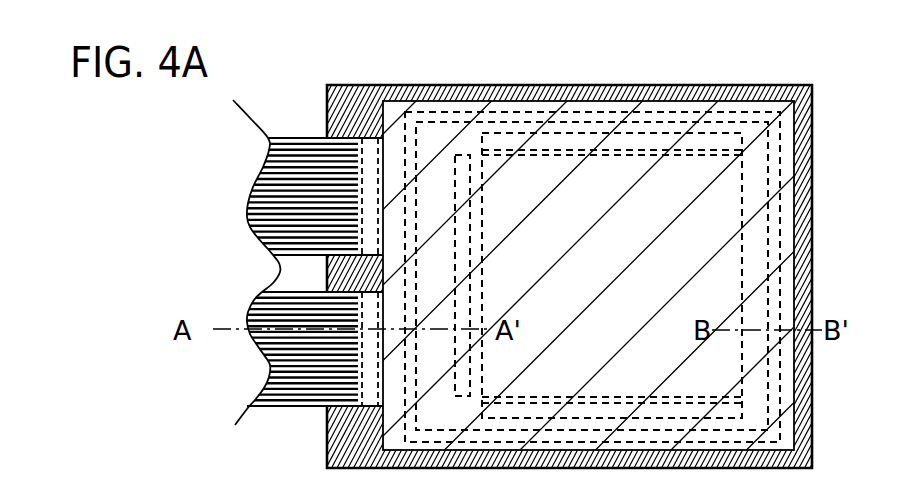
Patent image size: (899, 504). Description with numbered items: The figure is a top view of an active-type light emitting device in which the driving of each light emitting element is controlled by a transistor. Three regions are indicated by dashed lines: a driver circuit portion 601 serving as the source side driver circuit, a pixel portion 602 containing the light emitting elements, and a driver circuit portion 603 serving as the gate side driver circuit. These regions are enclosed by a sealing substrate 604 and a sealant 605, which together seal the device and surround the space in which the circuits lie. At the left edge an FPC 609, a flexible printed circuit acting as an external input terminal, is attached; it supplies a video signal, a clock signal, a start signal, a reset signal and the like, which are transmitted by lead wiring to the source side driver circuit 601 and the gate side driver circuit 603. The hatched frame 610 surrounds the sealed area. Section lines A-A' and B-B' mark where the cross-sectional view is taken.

The driver circuit portion (source side driver circuit) 601 is at (459, 397).
The pixel portion 602 is at (728, 377).
The driver circuit portion (gate side driver circuit) 603 is at (592, 140).
The sealing substrate 604 is at (400, 112).
The sealant 605 is at (768, 187).
The FPC (Flexible Printed Circuit) 609 is at (288, 406).
The frame substrate 610 is at (327, 99).